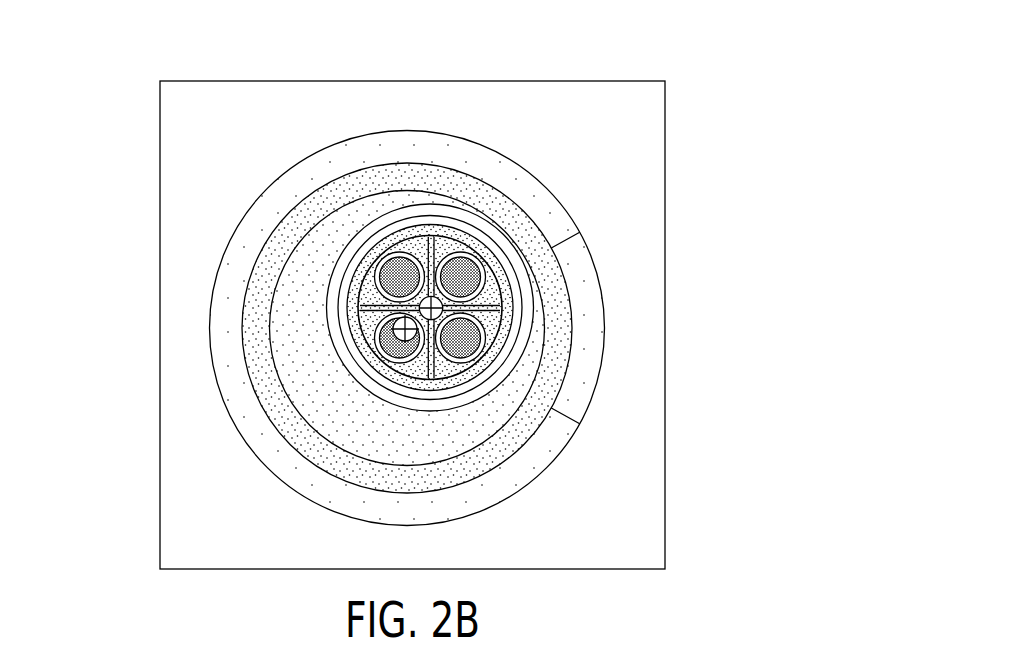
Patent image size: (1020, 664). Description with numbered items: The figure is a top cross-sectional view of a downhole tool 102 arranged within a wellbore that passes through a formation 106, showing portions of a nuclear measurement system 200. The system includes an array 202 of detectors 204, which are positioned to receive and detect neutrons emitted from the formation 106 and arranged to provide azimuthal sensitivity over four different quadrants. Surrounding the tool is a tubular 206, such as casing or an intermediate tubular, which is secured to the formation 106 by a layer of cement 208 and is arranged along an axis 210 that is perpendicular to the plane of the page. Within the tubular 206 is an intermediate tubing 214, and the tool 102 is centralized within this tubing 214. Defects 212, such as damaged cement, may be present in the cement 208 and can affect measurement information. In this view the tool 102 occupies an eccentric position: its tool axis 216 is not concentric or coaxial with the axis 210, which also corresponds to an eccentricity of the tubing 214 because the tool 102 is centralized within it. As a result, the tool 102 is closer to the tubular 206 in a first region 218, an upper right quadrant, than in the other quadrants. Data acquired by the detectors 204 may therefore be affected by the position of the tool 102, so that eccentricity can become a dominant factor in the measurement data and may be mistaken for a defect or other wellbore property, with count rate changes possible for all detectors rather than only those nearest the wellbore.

The downhole tool 102 is at (340, 237).
The formation 106 is at (610, 132).
The nuclear measurement system 200 is at (502, 183).
The array 202 is at (495, 248).
The detectors 204 is at (385, 343).
The tubular 206 is at (373, 178).
The layer of cement 208 is at (413, 147).
The axis 210 is at (398, 340).
The defects 212 is at (588, 317).
The intermediate tubing 214 is at (515, 370).
The tool axis 216 is at (436, 318).
The first region 218 is at (462, 123).